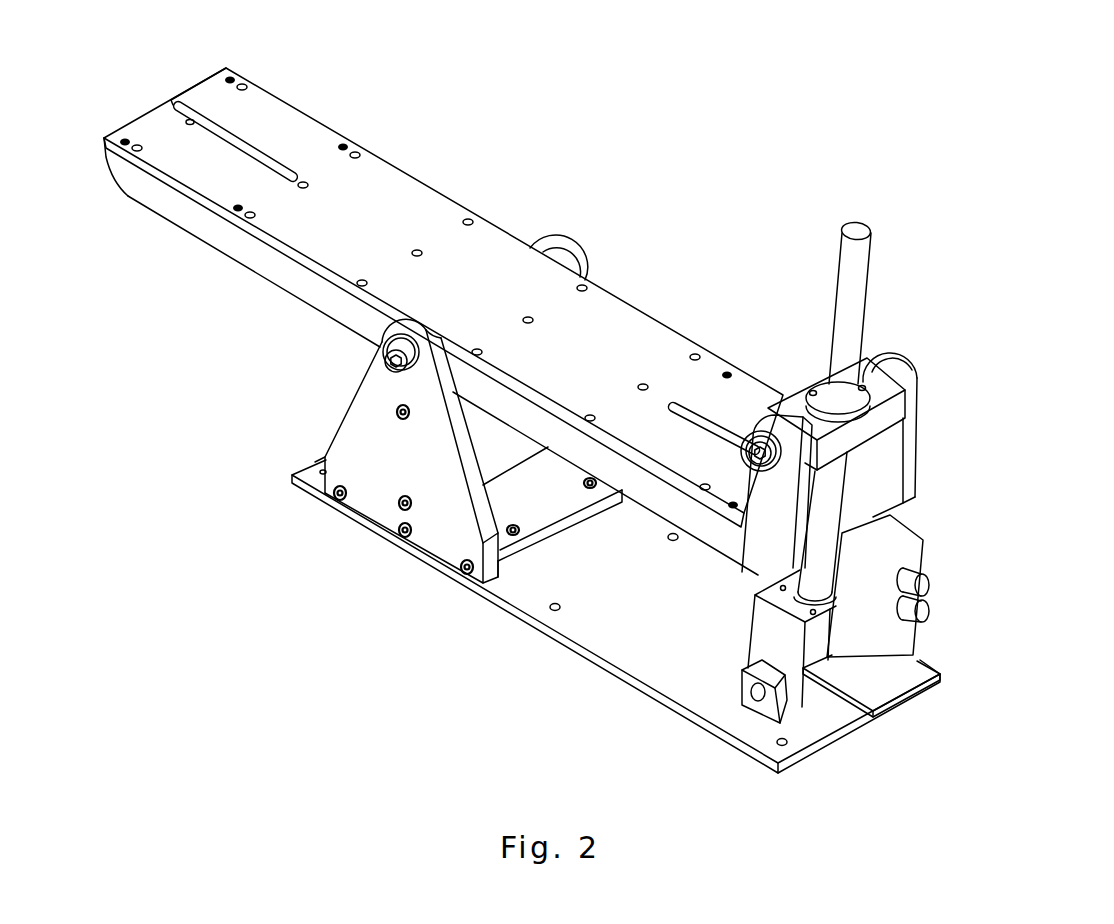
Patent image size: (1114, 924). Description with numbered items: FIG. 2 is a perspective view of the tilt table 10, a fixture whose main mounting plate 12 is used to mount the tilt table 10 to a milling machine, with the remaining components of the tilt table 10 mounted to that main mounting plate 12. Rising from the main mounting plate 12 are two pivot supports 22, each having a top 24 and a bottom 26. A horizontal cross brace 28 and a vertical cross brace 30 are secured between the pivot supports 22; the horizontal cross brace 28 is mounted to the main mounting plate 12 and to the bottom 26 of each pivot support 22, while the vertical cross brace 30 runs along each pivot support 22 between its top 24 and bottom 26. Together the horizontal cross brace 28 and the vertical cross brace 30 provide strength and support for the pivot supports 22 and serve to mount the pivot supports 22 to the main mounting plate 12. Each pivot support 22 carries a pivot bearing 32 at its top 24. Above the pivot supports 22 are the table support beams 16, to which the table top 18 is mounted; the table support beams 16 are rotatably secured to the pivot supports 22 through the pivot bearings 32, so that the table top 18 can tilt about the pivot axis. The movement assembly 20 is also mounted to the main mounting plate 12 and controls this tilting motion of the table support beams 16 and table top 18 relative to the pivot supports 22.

The tilt table 10 is at (557, 140).
The main mounting plate 12 is at (692, 722).
The table support beams 16 is at (185, 230).
The table top 18 is at (378, 194).
The movement assembly 20 is at (953, 532).
The pivot supports 22 is at (578, 258).
The top 24 is at (398, 325).
The bottom 26 is at (490, 572).
The horizontal cross brace 28 is at (520, 557).
The vertical cross brace 30 is at (505, 455).
The pivot bearing 32 is at (390, 343).